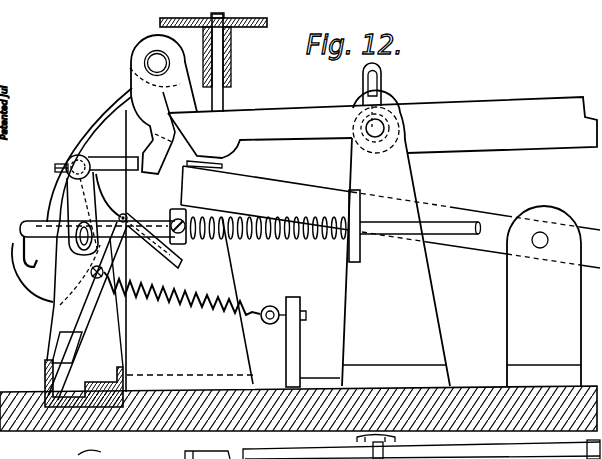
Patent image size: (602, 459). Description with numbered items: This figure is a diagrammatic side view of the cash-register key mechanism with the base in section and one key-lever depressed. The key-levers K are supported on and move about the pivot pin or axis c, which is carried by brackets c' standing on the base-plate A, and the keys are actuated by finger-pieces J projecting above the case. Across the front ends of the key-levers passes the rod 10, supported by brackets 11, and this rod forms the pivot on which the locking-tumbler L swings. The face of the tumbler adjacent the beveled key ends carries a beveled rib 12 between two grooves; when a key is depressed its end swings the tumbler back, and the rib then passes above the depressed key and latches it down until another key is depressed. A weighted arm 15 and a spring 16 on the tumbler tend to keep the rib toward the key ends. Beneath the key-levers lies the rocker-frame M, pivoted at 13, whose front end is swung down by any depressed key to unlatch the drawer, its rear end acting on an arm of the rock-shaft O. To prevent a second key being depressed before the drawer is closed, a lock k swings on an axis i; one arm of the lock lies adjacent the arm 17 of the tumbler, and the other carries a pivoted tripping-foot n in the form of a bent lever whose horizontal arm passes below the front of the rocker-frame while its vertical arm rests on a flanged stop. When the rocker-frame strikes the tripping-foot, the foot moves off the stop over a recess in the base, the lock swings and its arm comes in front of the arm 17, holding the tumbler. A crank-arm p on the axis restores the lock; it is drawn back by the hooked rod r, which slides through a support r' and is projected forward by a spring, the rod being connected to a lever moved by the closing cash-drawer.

The rod 10 is at (157, 63).
The beveled rib 12 is at (155, 105).
The arm 17 is at (157, 157).
The finger-pieces J is at (224, 97).
The locking-tumbler L is at (144, 120).
The lock k is at (120, 157).
The axis i is at (75, 155).
The key-levers K is at (382, 127).
The pivot pin or axis c is at (381, 108).
The brackets c' is at (396, 238).
The rocker-frame M is at (390, 214).
The hooked rod r is at (241, 227).
The support r' is at (364, 227).
The weighted arm 15 is at (58, 244).
The pivot 13 is at (553, 233).
The base-plate A is at (280, 392).
The rock-shaft O is at (76, 383).
The brackets 11 is at (225, 251).
The crank-arm p is at (72, 224).
The tripping-foot n is at (87, 311).
The strut n' is at (139, 222).
The spring 16 is at (205, 329).